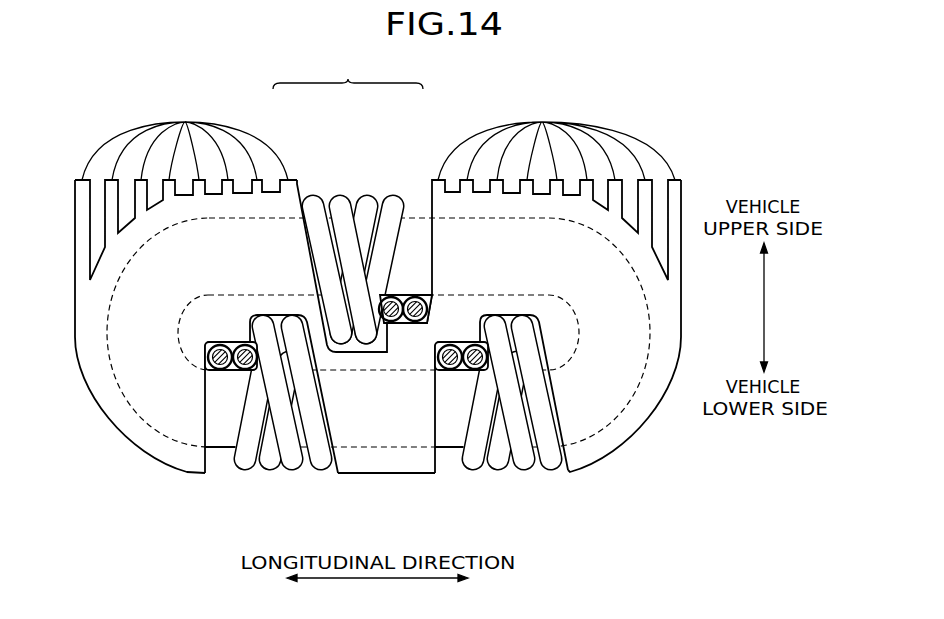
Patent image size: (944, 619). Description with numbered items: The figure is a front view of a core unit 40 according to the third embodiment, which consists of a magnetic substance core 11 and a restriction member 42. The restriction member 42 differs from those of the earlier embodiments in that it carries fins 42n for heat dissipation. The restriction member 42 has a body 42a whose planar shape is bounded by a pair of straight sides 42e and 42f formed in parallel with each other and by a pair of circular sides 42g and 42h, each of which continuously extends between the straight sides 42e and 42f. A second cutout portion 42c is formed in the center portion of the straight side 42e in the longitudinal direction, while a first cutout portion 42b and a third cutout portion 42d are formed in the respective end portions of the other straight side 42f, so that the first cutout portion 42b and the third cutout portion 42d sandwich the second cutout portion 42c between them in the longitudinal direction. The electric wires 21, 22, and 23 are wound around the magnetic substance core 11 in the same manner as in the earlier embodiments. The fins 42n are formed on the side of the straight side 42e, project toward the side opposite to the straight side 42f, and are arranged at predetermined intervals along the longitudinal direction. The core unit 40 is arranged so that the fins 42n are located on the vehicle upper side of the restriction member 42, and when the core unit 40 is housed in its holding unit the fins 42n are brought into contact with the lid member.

The core unit 40 is at (348, 72).
The restriction member 42 is at (297, 172).
The body 42a is at (66, 316).
The first cutout portion 42b is at (212, 470).
The second cutout portion 42c is at (309, 205).
The third cutout portion 42d is at (440, 470).
The straight side 42e is at (452, 188).
The straight side 42f is at (377, 475).
The circular side 42g is at (75, 338).
The circular side 42h is at (682, 337).
The fins 42n is at (378, 139).
The magnetic substance core 11 is at (418, 212).
The electric wire 21 is at (281, 478).
The electric wire 22 is at (378, 185).
The electric wire 23 is at (509, 480).